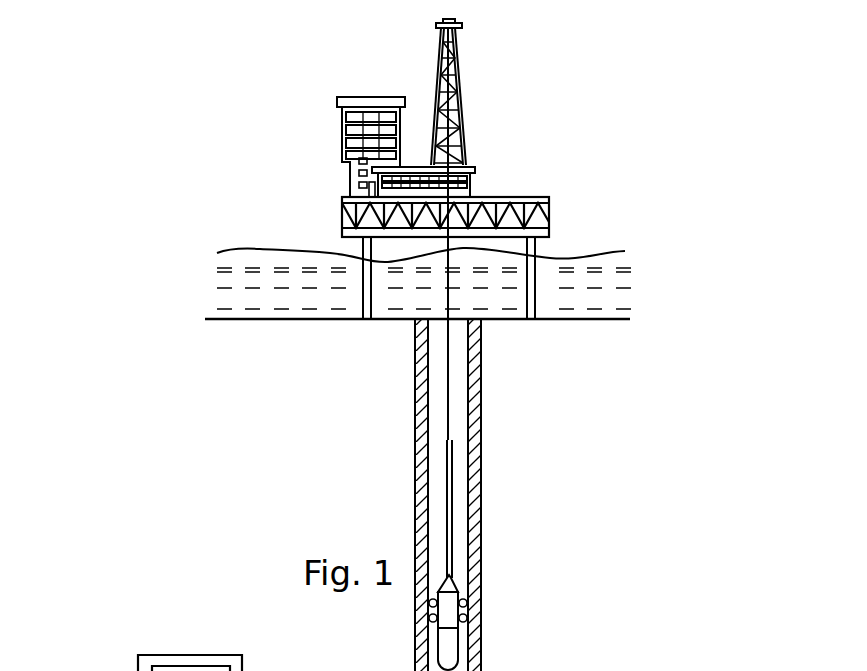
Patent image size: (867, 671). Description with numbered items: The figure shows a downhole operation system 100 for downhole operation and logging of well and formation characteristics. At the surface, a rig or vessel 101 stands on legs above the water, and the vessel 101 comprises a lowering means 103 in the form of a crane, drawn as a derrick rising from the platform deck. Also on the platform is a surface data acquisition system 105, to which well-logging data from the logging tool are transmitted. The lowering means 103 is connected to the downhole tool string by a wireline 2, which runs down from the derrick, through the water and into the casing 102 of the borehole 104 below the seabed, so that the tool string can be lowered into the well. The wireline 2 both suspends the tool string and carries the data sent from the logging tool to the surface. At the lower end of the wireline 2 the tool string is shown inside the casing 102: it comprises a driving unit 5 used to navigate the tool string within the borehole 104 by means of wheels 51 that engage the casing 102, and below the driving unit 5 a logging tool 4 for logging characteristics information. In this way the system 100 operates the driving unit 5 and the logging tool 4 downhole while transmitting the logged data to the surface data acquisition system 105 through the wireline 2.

The downhole operation system 100 is at (170, 459).
The rig or vessel 101 is at (517, 196).
The casing 102 is at (475, 378).
The lowering means 103 is at (463, 87).
The borehole 104 is at (437, 482).
The surface data acquisition system 105 is at (340, 129).
The wireline 2 is at (449, 447).
The driving unit 5 is at (510, 607).
The wheels 51 is at (467, 618).
The logging tool 4 is at (453, 648).